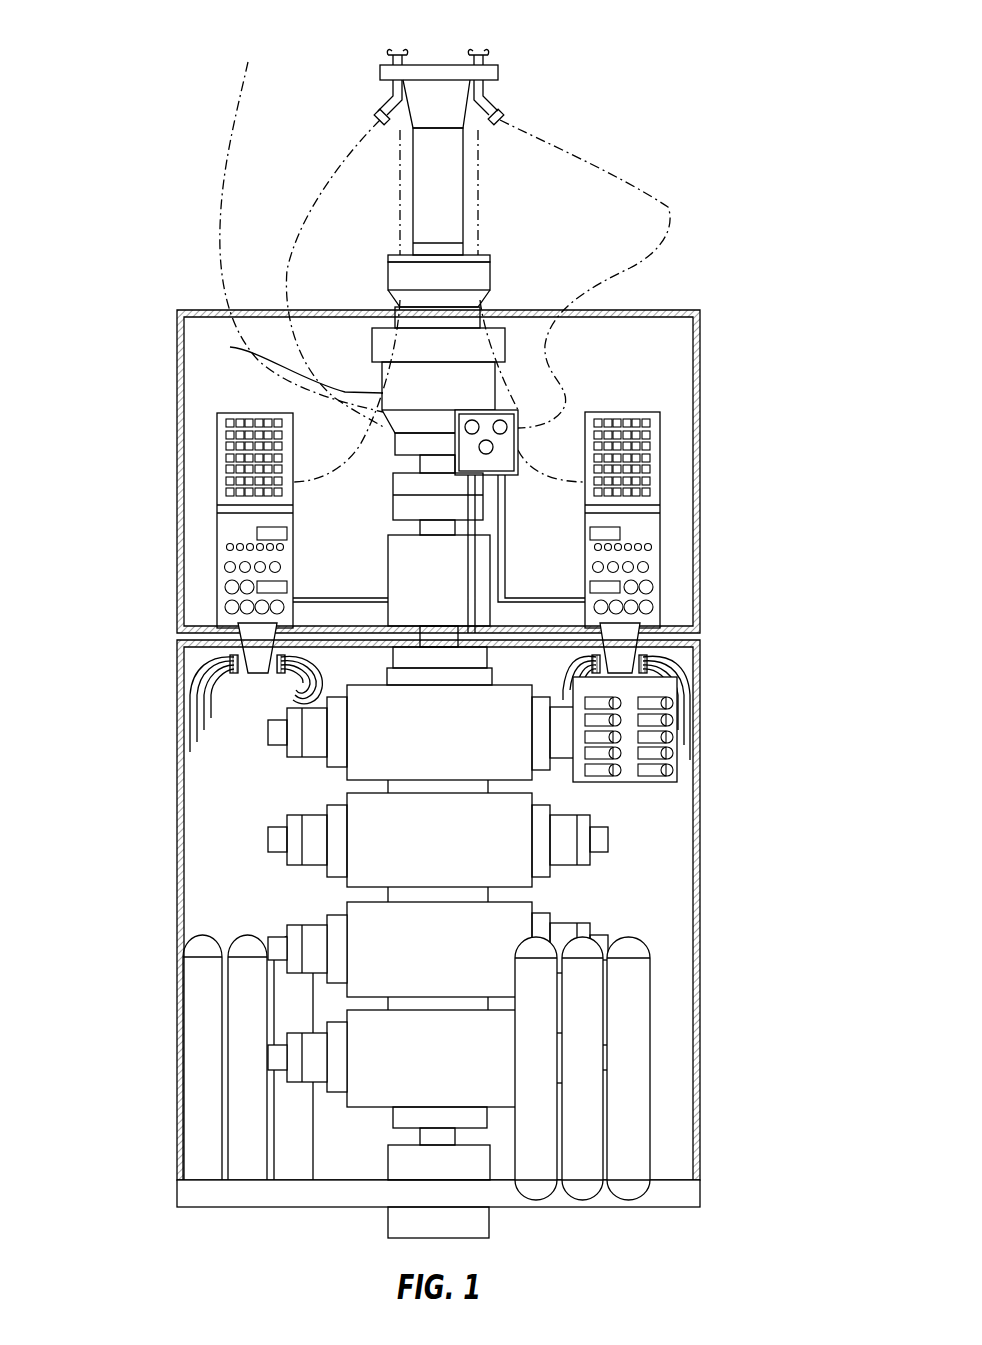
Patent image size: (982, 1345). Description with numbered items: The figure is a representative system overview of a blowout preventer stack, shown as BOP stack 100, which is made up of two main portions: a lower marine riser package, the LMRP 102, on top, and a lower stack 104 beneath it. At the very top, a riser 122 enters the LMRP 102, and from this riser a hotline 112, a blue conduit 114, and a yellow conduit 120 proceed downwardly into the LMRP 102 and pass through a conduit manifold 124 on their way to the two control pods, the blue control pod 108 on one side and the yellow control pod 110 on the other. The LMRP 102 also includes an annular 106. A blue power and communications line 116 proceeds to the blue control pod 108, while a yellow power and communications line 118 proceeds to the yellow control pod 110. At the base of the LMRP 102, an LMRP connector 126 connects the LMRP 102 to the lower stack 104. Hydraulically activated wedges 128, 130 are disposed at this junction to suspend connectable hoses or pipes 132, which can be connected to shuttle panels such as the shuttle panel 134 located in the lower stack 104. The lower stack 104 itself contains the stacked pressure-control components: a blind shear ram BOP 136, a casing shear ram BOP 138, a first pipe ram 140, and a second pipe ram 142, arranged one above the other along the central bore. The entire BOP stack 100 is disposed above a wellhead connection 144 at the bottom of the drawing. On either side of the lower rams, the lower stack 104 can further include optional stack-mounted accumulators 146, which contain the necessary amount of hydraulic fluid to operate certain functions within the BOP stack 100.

The BOP stack 100 is at (708, 50).
The lower marine riser package (LMRP) 102 is at (718, 310).
The lower stack 104 is at (718, 640).
The annular 106 is at (284, 363).
The blue control pod 108 is at (254, 413).
The yellow control pod 110 is at (620, 412).
The hotline 112 is at (232, 157).
The blue conduit 114 is at (325, 178).
The blue power and communications line 116 is at (400, 212).
The yellow power and communications line 118 is at (480, 212).
The yellow conduit 120 is at (672, 208).
The riser 122 is at (446, 65).
The conduit manifold 124 is at (470, 410).
The LMRP connector 126 is at (388, 572).
The hydraulically activated wedge 128 is at (258, 675).
The hydraulically activated wedge 130 is at (612, 622).
The connectable hoses or pipes 132 is at (695, 675).
The shuttle panel 134 is at (610, 782).
The blind shear ram BOP 136 is at (459, 747).
The casing shear ram BOP 138 is at (459, 857).
The first pipe ram 140 is at (459, 964).
The second pipe ram 142 is at (459, 1072).
The wellhead connection 144 is at (388, 1222).
The stack-mounted accumulators 146 is at (582, 970).